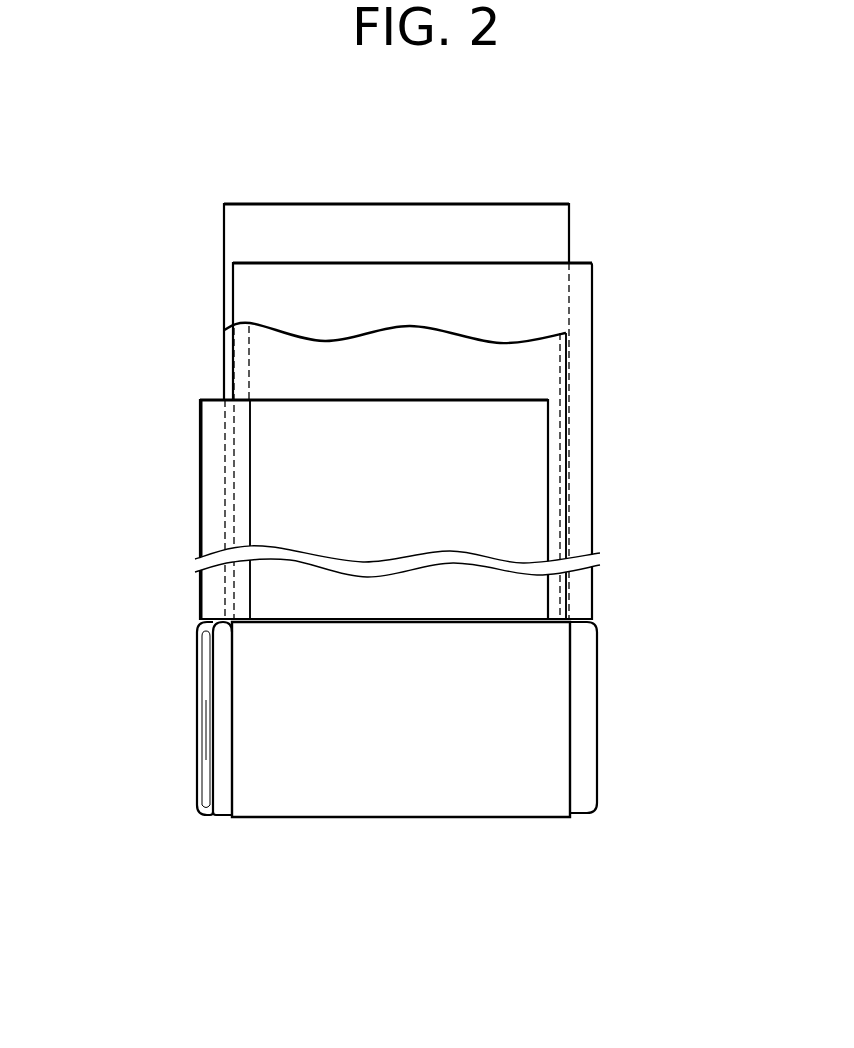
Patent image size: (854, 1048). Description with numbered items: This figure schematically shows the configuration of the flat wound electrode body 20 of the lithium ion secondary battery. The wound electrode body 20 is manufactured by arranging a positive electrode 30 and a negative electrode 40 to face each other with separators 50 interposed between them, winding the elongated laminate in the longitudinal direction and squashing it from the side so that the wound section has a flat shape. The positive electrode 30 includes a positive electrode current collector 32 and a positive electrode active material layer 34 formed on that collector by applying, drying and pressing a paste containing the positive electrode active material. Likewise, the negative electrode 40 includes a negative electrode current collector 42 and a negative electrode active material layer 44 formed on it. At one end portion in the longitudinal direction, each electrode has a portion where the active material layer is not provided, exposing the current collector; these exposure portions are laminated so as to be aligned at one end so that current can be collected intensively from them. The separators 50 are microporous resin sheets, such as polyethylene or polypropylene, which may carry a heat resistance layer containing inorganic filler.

The wound electrode body 20 is at (460, 793).
The positive electrode 30 is at (301, 509).
The positive electrode current collector 32 is at (197, 423).
The positive electrode active material layer 34 is at (268, 523).
The negative electrode 40 is at (484, 439).
The negative electrode current collector 42 is at (580, 452).
The negative electrode active material layer 44 is at (532, 292).
The separator 50 is at (245, 225).